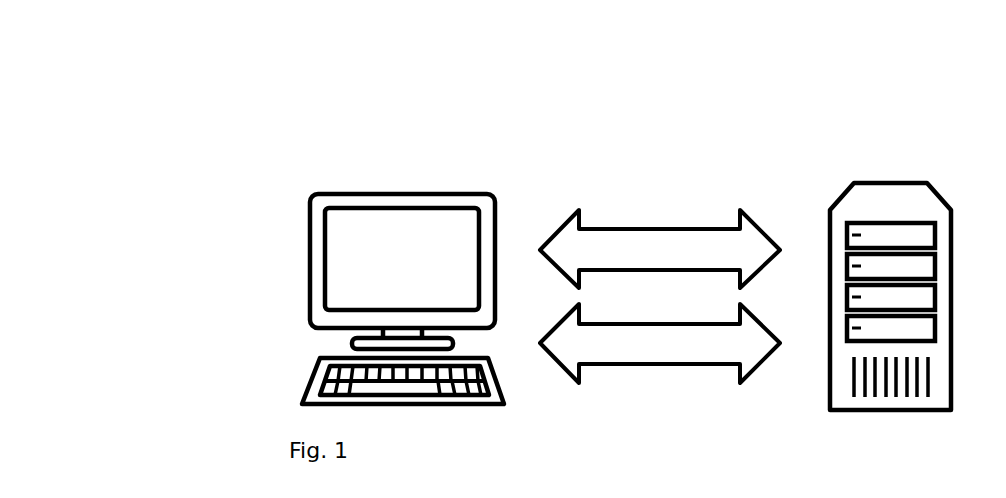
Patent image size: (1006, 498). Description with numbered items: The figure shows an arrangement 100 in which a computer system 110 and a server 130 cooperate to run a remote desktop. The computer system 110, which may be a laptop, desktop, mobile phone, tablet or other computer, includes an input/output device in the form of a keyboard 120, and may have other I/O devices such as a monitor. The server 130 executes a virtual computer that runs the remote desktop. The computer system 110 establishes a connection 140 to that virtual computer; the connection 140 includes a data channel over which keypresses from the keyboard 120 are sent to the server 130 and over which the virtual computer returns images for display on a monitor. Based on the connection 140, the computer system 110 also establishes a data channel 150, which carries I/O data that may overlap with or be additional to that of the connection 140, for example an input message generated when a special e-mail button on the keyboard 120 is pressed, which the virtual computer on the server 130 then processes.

The system 100 is at (236, 150).
The computer system 110 is at (353, 193).
The keyboard 120 is at (307, 375).
The server 130 is at (893, 181).
The connection 140 is at (660, 249).
The data channel 150 is at (660, 343).